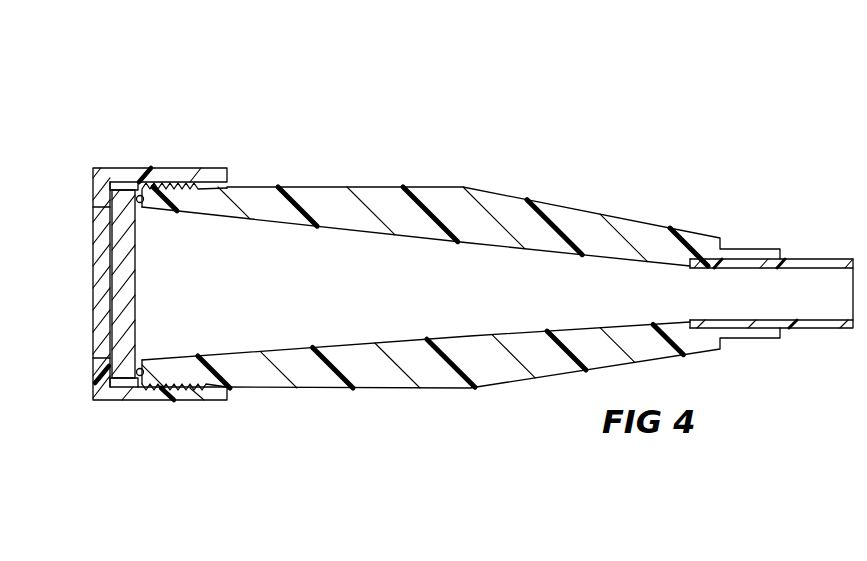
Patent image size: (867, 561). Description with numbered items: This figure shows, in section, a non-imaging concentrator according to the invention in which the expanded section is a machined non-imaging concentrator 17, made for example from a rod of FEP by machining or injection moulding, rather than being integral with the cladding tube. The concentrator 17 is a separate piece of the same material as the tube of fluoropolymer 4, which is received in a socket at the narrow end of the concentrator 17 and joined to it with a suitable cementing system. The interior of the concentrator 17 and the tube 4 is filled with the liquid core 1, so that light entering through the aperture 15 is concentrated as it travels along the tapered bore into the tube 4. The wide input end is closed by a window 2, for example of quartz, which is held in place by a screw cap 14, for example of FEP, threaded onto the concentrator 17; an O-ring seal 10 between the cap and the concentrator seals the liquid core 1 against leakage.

The liquid core 1 is at (595, 283).
The window 2 is at (120, 262).
The tube of fluoropolymer 4 is at (820, 261).
The O-ring seal 10 is at (152, 388).
The screw cap 14 is at (162, 169).
The aperture 15 is at (100, 302).
The machined non-imaging concentrator 17 is at (380, 210).